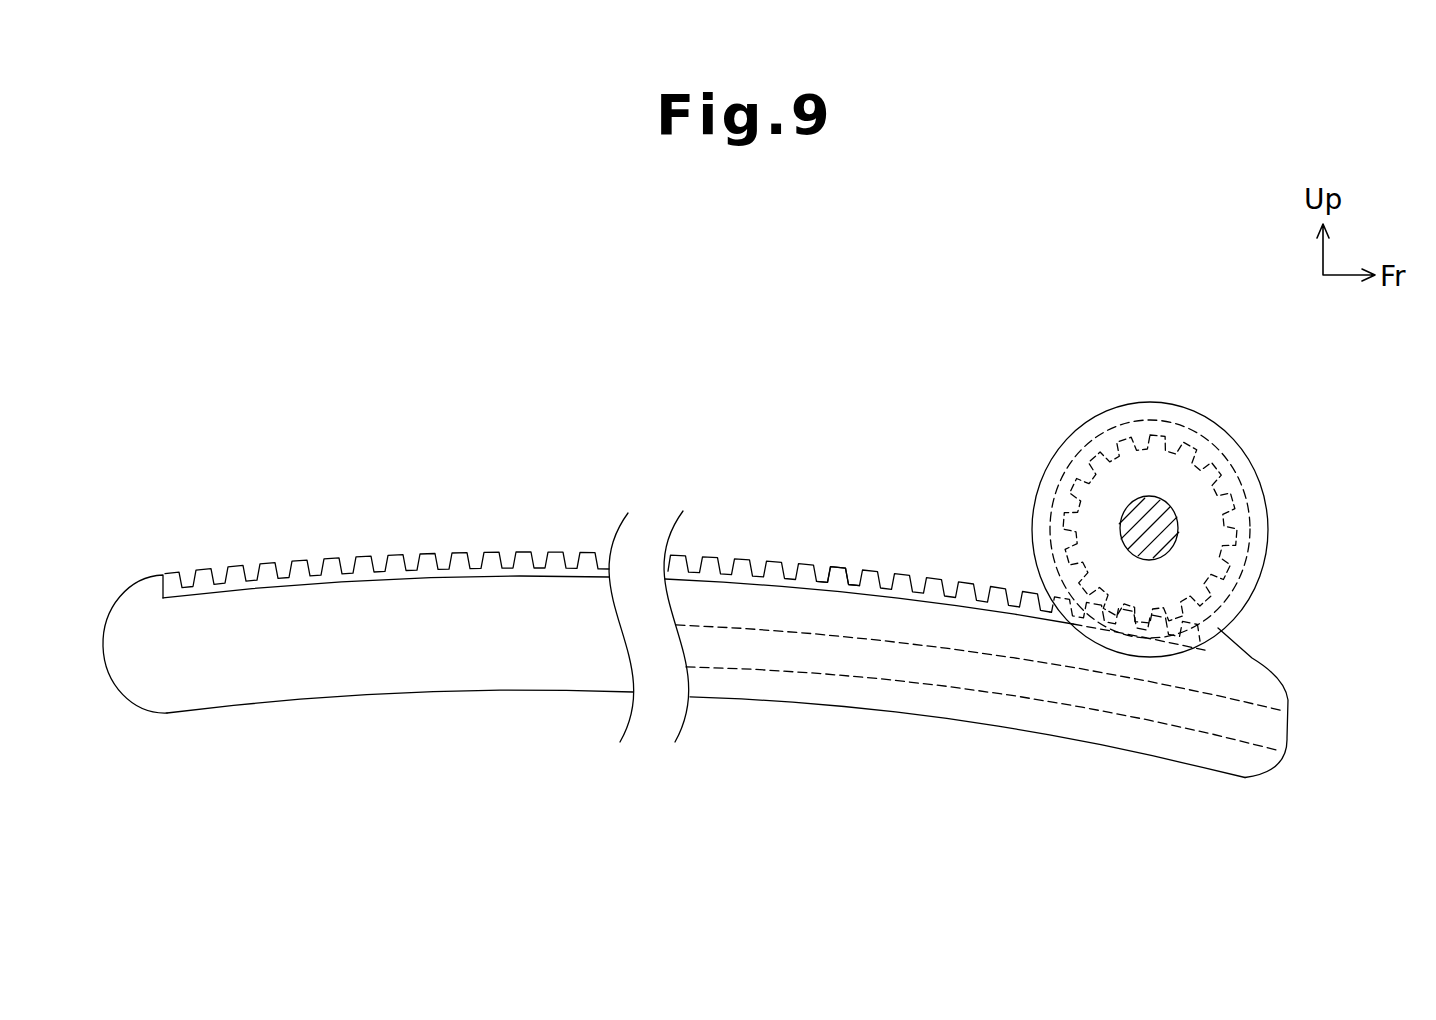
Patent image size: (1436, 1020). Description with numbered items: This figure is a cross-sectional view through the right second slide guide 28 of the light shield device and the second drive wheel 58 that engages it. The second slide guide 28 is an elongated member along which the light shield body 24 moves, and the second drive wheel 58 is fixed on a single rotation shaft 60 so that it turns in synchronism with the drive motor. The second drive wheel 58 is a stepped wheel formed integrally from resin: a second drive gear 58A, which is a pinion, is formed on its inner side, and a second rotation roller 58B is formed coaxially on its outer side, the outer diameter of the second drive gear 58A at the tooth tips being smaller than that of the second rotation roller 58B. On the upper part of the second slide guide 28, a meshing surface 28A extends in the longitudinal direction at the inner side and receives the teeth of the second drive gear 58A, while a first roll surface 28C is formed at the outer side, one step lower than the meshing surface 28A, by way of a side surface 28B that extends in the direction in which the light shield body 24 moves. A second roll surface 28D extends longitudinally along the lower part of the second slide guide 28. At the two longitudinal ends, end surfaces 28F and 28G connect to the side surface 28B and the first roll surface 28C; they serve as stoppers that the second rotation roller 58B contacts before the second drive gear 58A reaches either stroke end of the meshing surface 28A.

The light shield body 24 is at (1113, 713).
The second slide guide 28 is at (532, 708).
The meshing surface 28A is at (898, 575).
The side surface 28B is at (840, 577).
The first roll surface 28C is at (788, 585).
The second roll surface 28D is at (848, 710).
The end surface 28F is at (1196, 623).
The end surface 28G is at (166, 580).
The second drive wheel 58 is at (1227, 333).
The second drive gear 58A is at (1112, 427).
The second rotation roller 58B is at (1157, 437).
The rotation shaft 60 is at (1178, 527).